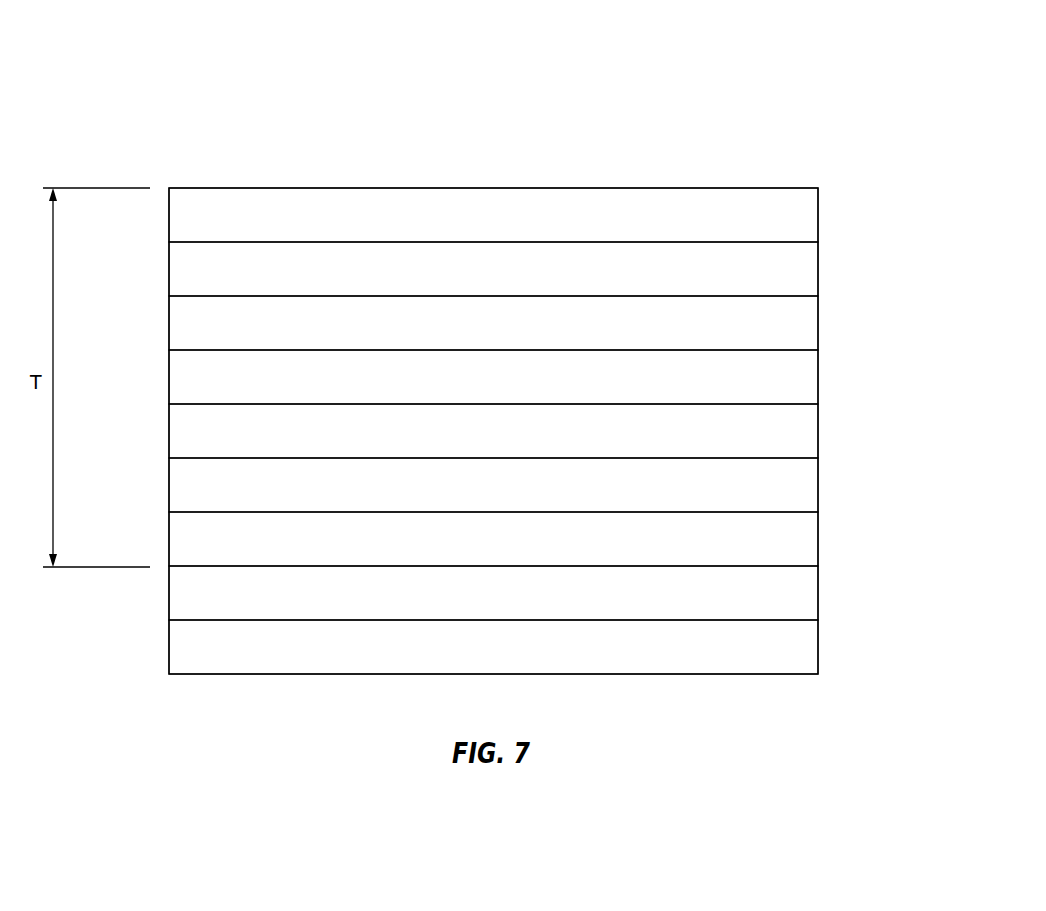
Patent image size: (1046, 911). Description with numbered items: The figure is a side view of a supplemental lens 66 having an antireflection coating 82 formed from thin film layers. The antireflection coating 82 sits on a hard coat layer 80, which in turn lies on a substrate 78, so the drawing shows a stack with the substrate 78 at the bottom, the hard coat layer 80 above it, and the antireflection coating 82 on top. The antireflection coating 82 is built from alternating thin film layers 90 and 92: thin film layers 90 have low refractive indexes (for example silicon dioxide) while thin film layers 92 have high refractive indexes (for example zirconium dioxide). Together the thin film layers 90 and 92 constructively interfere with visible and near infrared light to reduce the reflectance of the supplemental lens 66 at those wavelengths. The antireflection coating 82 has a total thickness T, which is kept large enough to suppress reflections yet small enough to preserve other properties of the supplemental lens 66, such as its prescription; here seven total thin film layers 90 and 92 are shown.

The supplemental lens 66 is at (689, 86).
The substrate 78 is at (178, 646).
The hard coat layer 80 is at (178, 591).
The antireflection coating 82 is at (845, 188).
The thin film layers 90 is at (178, 213).
The thin film layers 92 is at (178, 267).